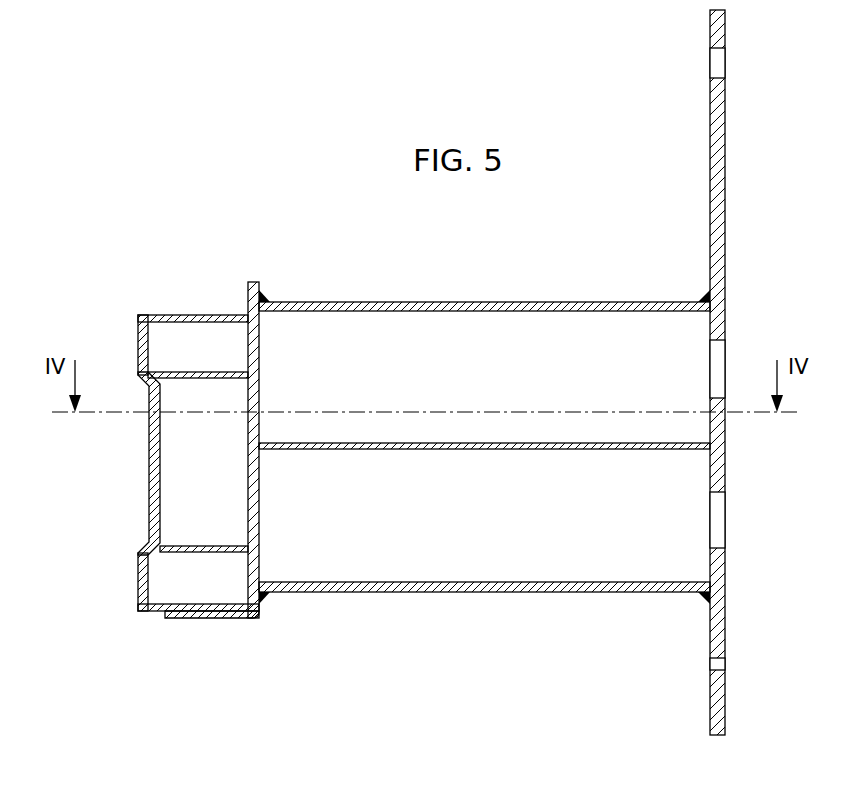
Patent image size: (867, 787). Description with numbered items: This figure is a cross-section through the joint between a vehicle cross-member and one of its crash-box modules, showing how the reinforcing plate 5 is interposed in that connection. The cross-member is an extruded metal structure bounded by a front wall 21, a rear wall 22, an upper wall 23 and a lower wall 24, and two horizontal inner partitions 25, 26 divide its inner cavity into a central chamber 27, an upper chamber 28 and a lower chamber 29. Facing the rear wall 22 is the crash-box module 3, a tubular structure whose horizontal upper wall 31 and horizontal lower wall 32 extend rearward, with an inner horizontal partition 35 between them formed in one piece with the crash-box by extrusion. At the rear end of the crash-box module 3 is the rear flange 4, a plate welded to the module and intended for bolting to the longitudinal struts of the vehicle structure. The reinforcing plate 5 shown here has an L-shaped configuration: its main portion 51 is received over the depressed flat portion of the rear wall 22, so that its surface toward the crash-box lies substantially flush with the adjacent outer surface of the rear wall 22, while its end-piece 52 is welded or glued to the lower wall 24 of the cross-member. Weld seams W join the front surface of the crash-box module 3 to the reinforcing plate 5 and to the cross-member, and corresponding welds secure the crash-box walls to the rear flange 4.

The crash-box module 3 is at (484, 464).
The rear flange 4 is at (732, 179).
The reinforcing plate 5 is at (215, 480).
The front wall 21 is at (215, 431).
The rear wall 22 is at (217, 328).
The upper wall 23 is at (209, 314).
The lower wall 24 is at (193, 610).
The horizontal inner partition 25 is at (190, 381).
The horizontal inner partition 26 is at (234, 547).
The central chamber 27 is at (236, 396).
The upper chamber 28 is at (170, 350).
The lower chamber 29 is at (165, 582).
The horizontal upper wall 31 is at (428, 302).
The horizontal lower wall 32 is at (556, 594).
The inner horizontal partition 35 is at (487, 450).
The main portion 51 is at (262, 507).
The end-piece 52 is at (216, 619).
The weld seam W is at (266, 298).